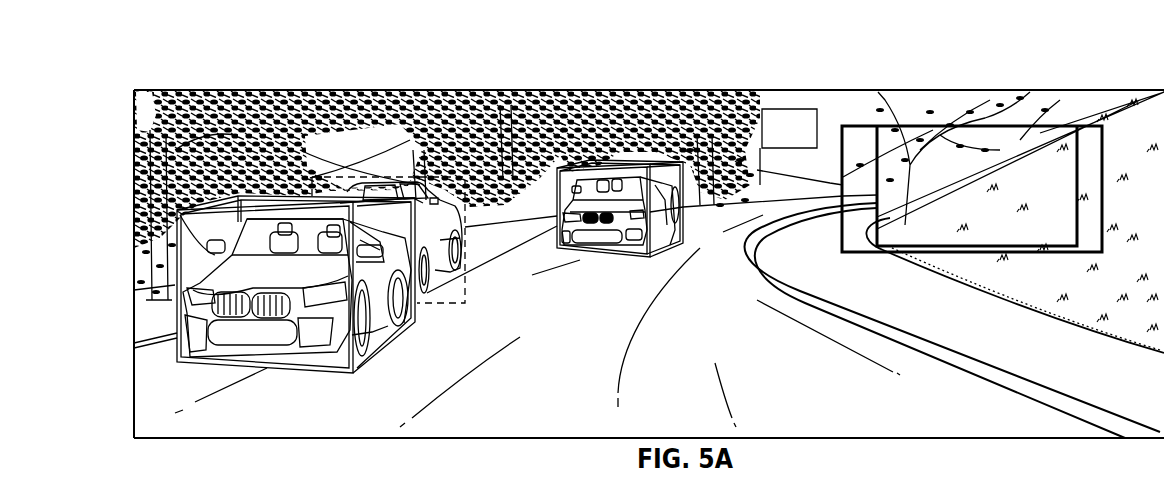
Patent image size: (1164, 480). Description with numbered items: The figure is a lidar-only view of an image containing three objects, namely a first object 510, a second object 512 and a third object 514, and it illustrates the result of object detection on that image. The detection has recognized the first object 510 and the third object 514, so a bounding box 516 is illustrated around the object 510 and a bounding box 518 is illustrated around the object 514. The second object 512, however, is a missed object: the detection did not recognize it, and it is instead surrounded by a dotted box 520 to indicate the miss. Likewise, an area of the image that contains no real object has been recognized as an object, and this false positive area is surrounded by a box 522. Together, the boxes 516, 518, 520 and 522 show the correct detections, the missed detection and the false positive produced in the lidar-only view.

The object 510 is at (297, 223).
The missed object 512 is at (420, 192).
The object 514 is at (632, 200).
The bounding box 516 is at (177, 323).
The bounding box 518 is at (582, 168).
The dotted box 520 is at (452, 295).
The box 522 is at (1000, 132).